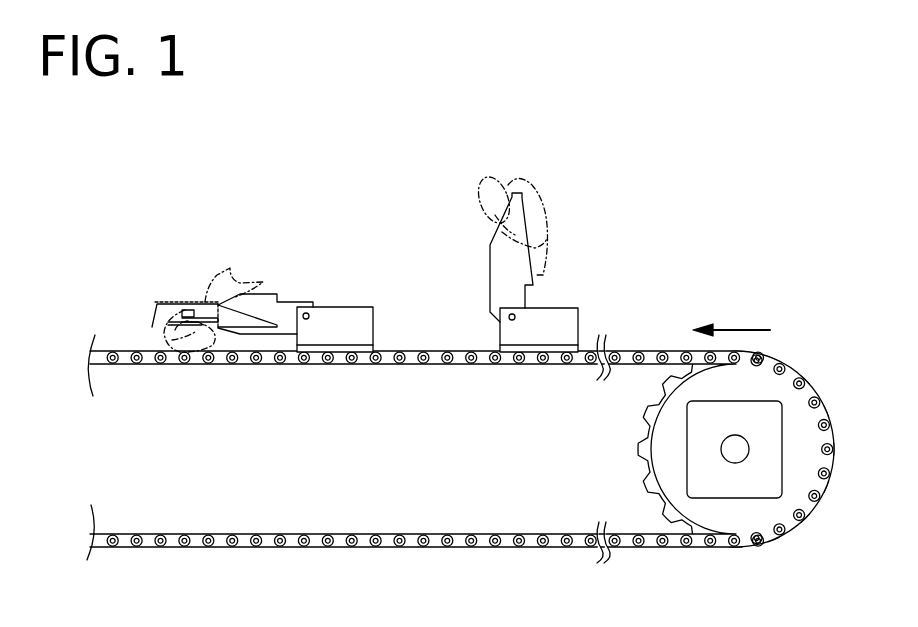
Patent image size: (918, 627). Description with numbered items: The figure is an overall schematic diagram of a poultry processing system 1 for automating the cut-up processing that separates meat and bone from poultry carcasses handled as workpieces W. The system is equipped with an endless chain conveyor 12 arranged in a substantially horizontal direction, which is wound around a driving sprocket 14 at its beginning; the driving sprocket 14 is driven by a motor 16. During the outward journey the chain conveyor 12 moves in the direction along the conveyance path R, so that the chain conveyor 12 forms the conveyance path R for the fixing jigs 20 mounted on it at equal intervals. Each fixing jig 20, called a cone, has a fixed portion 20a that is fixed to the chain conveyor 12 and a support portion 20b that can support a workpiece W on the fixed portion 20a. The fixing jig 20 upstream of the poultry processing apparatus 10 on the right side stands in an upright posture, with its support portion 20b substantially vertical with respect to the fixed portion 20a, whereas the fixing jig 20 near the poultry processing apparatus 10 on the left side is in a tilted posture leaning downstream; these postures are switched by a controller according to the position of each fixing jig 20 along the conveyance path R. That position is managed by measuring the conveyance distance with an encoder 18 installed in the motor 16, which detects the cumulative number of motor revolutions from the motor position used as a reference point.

The poultry processing system 1 is at (738, 200).
The poultry processing apparatus 10 is at (158, 281).
The chain conveyor 12 is at (460, 422).
The driving sprocket 14 is at (637, 435).
The motor 16 is at (687, 467).
The encoder 18 is at (735, 435).
The fixing jig 20 is at (384, 262).
The fixed portion 20a is at (357, 307).
The support portion 20b is at (290, 296).
The workpiece W is at (208, 282).
The conveyance path R is at (731, 319).